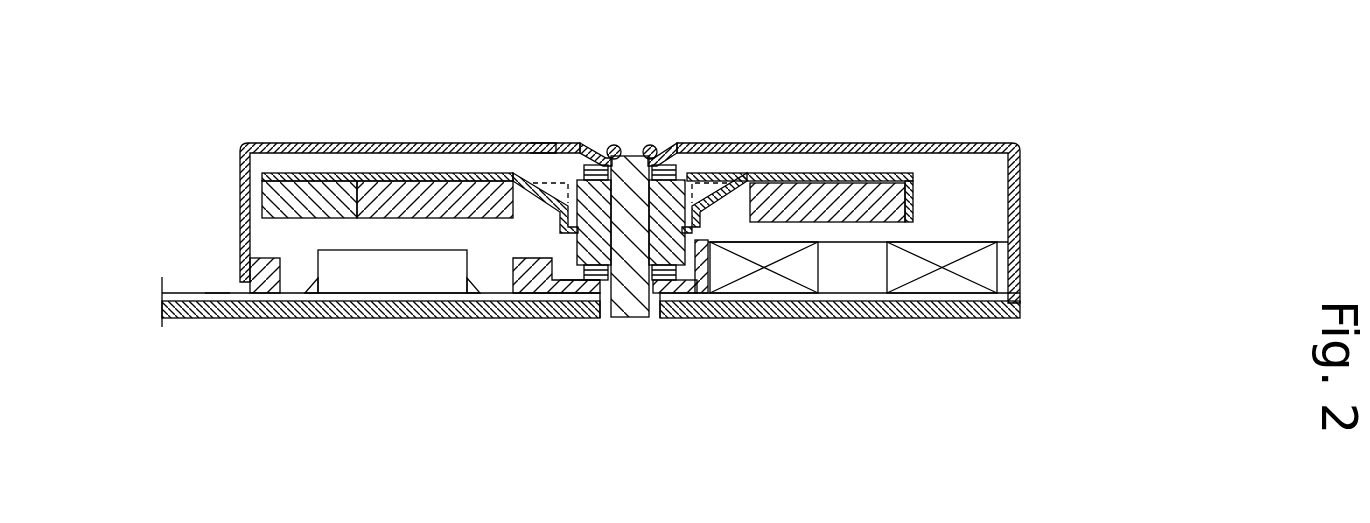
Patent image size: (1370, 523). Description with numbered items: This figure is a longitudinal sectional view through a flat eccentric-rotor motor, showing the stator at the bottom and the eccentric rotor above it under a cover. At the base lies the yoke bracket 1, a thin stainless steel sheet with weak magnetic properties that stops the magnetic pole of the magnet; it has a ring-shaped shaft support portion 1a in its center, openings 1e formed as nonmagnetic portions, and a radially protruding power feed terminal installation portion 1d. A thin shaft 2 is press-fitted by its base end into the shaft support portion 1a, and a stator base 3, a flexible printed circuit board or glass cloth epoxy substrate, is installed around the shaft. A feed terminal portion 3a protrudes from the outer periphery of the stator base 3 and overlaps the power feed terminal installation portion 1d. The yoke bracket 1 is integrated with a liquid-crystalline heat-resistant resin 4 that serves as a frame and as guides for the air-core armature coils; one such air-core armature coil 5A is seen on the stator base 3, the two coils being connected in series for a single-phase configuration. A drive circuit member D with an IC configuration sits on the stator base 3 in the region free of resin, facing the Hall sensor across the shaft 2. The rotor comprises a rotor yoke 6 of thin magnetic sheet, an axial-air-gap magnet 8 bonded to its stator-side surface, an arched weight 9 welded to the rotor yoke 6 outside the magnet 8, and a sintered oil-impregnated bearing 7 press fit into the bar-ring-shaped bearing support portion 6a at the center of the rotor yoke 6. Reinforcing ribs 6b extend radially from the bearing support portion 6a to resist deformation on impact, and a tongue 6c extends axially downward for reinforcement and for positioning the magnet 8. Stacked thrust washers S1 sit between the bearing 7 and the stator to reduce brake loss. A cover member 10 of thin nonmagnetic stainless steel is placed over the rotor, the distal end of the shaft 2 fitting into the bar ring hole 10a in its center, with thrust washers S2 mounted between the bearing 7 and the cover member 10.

The yoke bracket 1 is at (873, 298).
The shaft support portion 1a is at (678, 300).
The power feed terminal installation portion 1d is at (200, 300).
The openings 1e is at (412, 310).
The shaft 2 is at (605, 150).
The stator base 3 is at (260, 290).
The feed terminal portion 3a is at (215, 292).
The heat-resistant resin 4 is at (535, 290).
The air-core armature coil 5A is at (975, 270).
The rotor yoke 6 is at (480, 173).
The bearing support portion 6a is at (713, 173).
The reinforcing ribs 6b is at (700, 200).
The tongue 6c is at (907, 197).
The sintered oil-impregnated bearing 7 is at (690, 245).
The axial-air-gap magnet 8 is at (410, 183).
The arched weight 9 is at (302, 173).
The cover member 10 is at (247, 143).
The bar ring hole 10a is at (663, 150).
The drive circuit member D is at (365, 278).
The thrust washers S1 is at (580, 300).
The thrust washers S2 is at (542, 143).